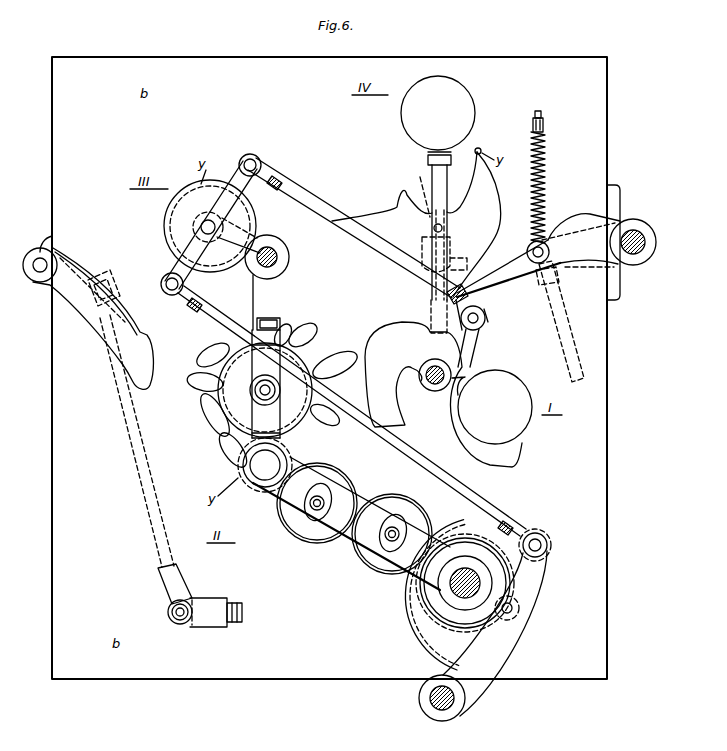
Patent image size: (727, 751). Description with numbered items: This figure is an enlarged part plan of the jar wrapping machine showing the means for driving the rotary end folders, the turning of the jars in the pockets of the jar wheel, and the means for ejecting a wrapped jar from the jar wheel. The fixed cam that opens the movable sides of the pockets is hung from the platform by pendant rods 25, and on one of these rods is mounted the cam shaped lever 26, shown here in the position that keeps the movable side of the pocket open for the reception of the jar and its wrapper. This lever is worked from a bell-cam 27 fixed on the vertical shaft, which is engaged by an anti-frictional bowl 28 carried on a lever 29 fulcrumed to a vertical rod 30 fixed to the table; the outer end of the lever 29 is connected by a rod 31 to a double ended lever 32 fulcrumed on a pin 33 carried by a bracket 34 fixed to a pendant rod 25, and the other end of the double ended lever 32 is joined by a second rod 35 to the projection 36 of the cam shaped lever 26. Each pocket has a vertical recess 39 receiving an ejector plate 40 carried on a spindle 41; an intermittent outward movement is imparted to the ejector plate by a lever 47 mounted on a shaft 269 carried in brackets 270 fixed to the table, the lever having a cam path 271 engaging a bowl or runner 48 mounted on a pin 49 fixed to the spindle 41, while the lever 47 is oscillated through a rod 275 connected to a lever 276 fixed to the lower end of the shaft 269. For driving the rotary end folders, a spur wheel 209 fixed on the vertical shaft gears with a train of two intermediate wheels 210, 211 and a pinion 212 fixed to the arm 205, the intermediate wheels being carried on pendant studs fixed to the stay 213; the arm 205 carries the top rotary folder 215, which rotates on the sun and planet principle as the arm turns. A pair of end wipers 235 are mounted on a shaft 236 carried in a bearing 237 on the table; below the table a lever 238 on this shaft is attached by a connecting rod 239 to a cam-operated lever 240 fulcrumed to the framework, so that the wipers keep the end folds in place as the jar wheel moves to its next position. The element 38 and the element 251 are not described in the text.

The pendant rods 25 is at (290, 253).
The cam shaped lever 26 is at (443, 394).
The bell-cam 27 is at (412, 625).
The anti-frictional bowl 28 is at (519, 607).
The lever 29 is at (478, 692).
The vertical rod 30 is at (426, 700).
The rod 31 is at (410, 453).
The double ended lever 32 is at (178, 262).
The pin 33 is at (200, 224).
The bracket 34 is at (240, 246).
The second rod 35 is at (368, 252).
The projection 36 is at (470, 345).
The ball / disc 38 is at (145, 244).
The vertical recess 39 is at (465, 193).
The ejector plate 40 is at (427, 153).
The spindle 41 is at (447, 178).
The lever 47 is at (528, 258).
The bowl or runner 48 is at (419, 178).
The pin 49 is at (443, 227).
The arm 205 is at (240, 410).
The spur wheel 209 is at (440, 595).
The intermediate wheel 210 is at (400, 562).
The intermediate wheel 211 is at (300, 535).
The pinion 212 is at (276, 507).
The stay 213 is at (355, 547).
The top rotary folder 215 is at (215, 355).
The end wipers 235 is at (84, 335).
The shaft 236 is at (40, 272).
The bearing 237 is at (52, 237).
The lever 238 is at (78, 268).
The connecting rod 239 is at (140, 424).
The lever 240 is at (200, 626).
The hub 251 is at (260, 481).
The shaft 269 is at (646, 243).
The brackets 270 is at (618, 289).
The cam path 271 is at (425, 245).
The rod 275 is at (565, 325).
The lever 276 is at (600, 227).